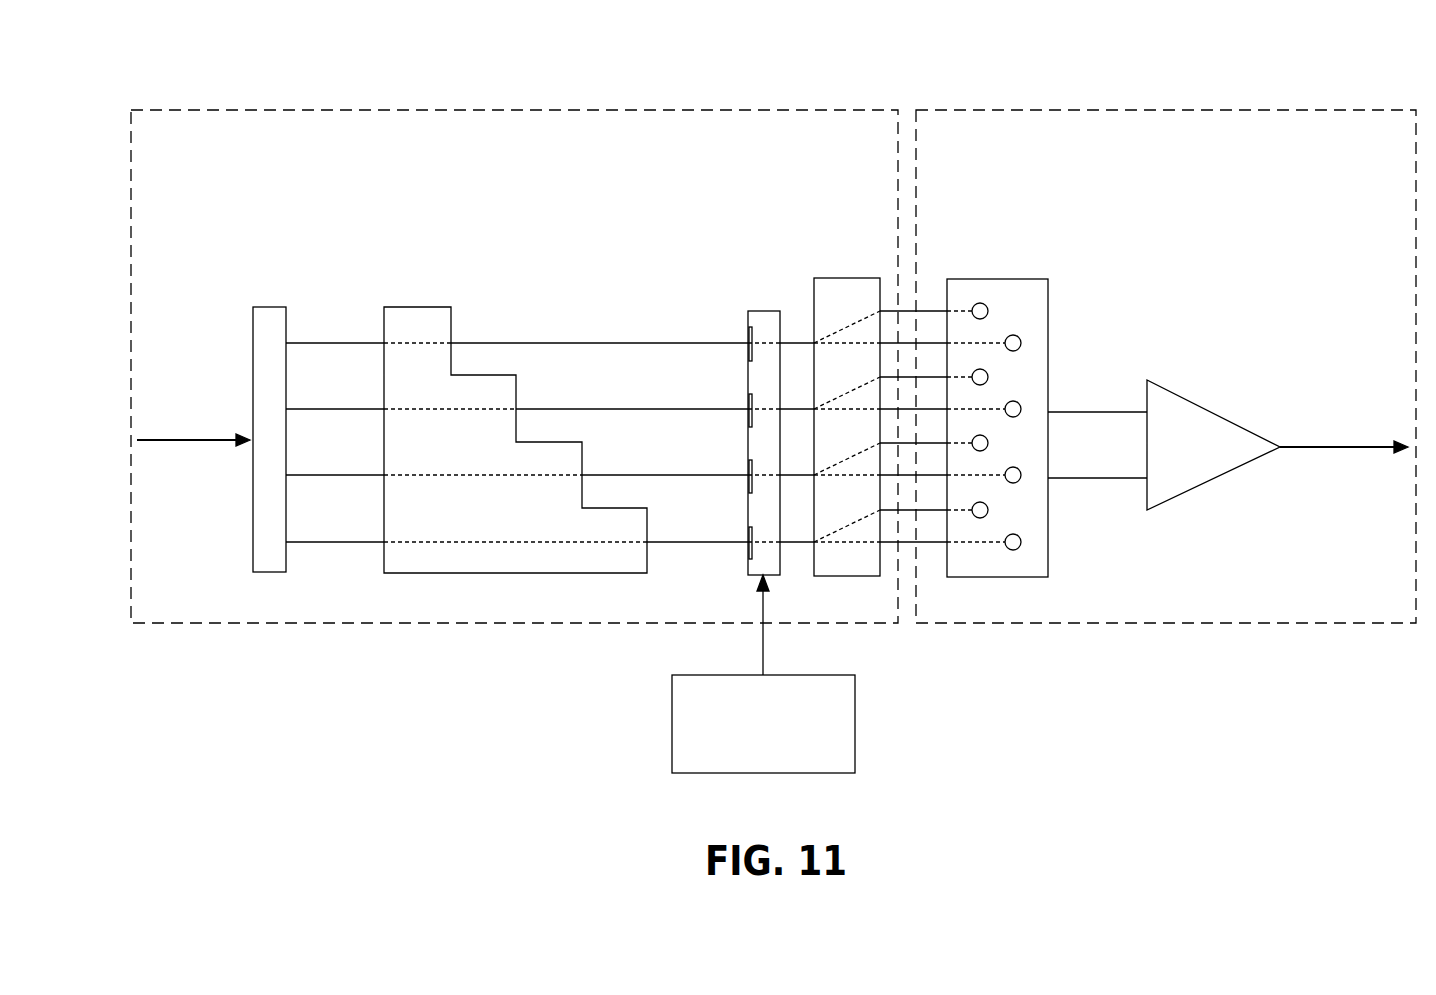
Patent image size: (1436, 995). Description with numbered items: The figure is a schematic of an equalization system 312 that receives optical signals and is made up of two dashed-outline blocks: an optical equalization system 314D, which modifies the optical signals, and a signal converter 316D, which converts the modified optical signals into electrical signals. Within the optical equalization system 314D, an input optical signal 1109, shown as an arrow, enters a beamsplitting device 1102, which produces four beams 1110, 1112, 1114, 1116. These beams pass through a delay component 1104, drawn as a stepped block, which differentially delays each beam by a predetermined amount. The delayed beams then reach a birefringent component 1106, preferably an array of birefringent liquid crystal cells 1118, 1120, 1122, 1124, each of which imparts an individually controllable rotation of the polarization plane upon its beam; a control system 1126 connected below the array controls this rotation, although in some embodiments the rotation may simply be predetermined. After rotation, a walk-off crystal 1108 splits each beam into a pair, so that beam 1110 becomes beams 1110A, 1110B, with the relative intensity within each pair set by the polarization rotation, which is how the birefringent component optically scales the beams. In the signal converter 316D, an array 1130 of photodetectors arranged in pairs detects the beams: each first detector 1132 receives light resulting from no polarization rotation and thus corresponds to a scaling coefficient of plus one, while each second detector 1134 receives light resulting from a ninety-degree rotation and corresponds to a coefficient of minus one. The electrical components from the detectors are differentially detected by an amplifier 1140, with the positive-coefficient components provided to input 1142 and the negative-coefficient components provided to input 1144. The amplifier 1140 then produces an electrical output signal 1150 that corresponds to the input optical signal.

The equalization system 312 is at (182, 92).
The optical equalization system 314D is at (514, 366).
The signal converter 316D is at (1166, 366).
The beamsplitting device 1102 is at (270, 307).
The delay component 1104 is at (412, 307).
The birefringent component 1106 is at (777, 311).
The walk-off crystal 1108 is at (860, 278).
The input optical signal 1109 is at (145, 442).
The beam 1110 is at (290, 343).
The beam 1112 is at (290, 409).
The beam 1114 is at (290, 475).
The beam 1116 is at (290, 542).
The beam 1110A is at (920, 311).
The beam 1110B is at (937, 343).
The liquid crystal cell 1118 is at (748, 351).
The liquid crystal cell 1120 is at (748, 418).
The liquid crystal cell 1122 is at (748, 484).
The liquid crystal cell 1124 is at (748, 551).
The control system 1126 is at (855, 742).
The array of photodetectors 1130 is at (1048, 375).
The first detector 1132 is at (980, 303).
The second detector 1134 is at (1013, 335).
The amplifier 1140 is at (1192, 398).
The input 1142 is at (1134, 394).
The input 1144 is at (1134, 496).
The electrical output signal 1150 is at (1360, 448).